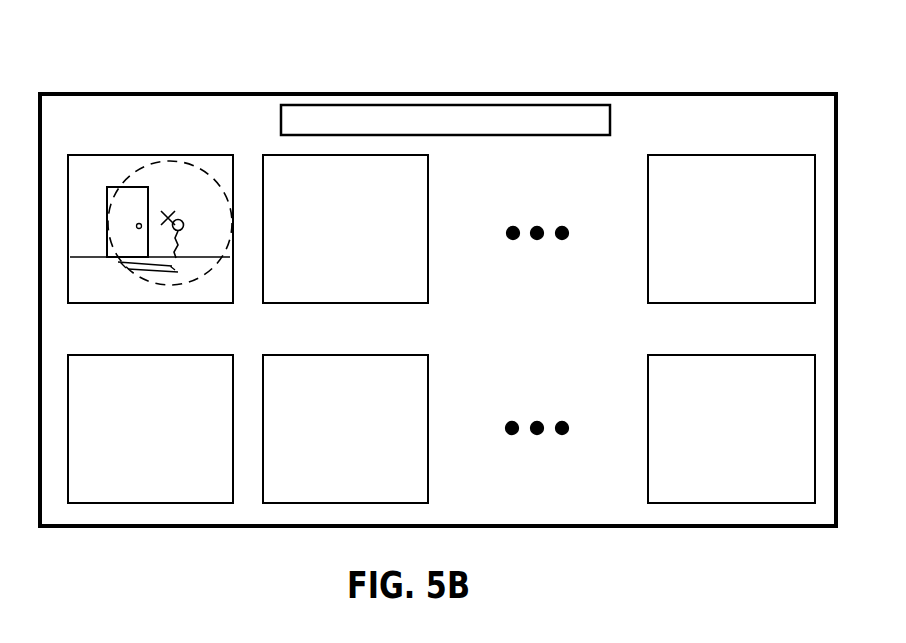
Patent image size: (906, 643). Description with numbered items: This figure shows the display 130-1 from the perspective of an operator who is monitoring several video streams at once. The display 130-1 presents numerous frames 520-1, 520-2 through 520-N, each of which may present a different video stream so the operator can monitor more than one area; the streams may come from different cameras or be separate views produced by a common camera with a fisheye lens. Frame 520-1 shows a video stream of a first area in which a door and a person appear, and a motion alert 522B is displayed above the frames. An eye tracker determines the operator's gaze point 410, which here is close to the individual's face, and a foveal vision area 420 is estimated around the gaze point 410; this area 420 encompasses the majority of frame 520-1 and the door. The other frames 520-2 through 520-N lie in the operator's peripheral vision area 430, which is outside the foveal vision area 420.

The display device 130-1 is at (255, 92).
The motion alert notification 522B is at (612, 110).
The frame 520-1 is at (155, 302).
The frame 520-2 is at (343, 303).
The frame 520-N is at (648, 430).
The peripheral vision area 430 is at (482, 182).
The foveal vision area 420 is at (127, 177).
The gaze point 410 is at (173, 190).